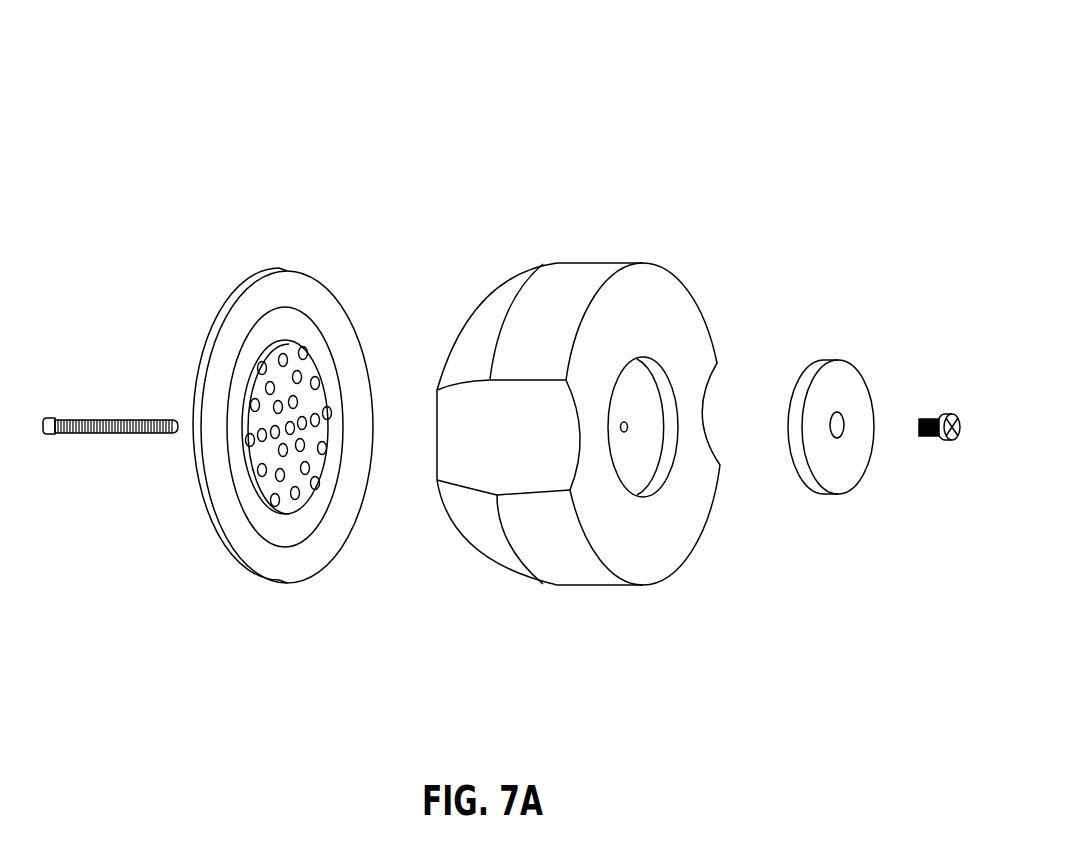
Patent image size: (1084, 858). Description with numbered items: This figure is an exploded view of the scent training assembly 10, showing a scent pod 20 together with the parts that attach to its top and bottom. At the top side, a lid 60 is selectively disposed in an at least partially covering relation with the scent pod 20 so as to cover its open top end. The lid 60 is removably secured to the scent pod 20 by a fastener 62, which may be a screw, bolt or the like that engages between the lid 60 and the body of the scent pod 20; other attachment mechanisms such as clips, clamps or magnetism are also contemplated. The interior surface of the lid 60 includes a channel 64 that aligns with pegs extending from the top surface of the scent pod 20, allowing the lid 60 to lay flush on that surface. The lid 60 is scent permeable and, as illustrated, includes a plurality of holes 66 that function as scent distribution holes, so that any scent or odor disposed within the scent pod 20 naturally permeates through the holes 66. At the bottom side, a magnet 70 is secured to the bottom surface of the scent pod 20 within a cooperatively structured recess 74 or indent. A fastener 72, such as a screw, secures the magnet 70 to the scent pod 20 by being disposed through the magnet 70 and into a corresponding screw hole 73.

The scent training assembly 10 is at (480, 52).
The scent pod 20 is at (588, 385).
The lid 60 is at (302, 378).
The fastener 62 is at (103, 417).
The channel 64 is at (297, 330).
The holes 66 is at (302, 375).
The magnet 70 is at (835, 360).
The fastener 72 is at (930, 412).
The screw hole 73 is at (624, 427).
The recess 74 is at (640, 383).